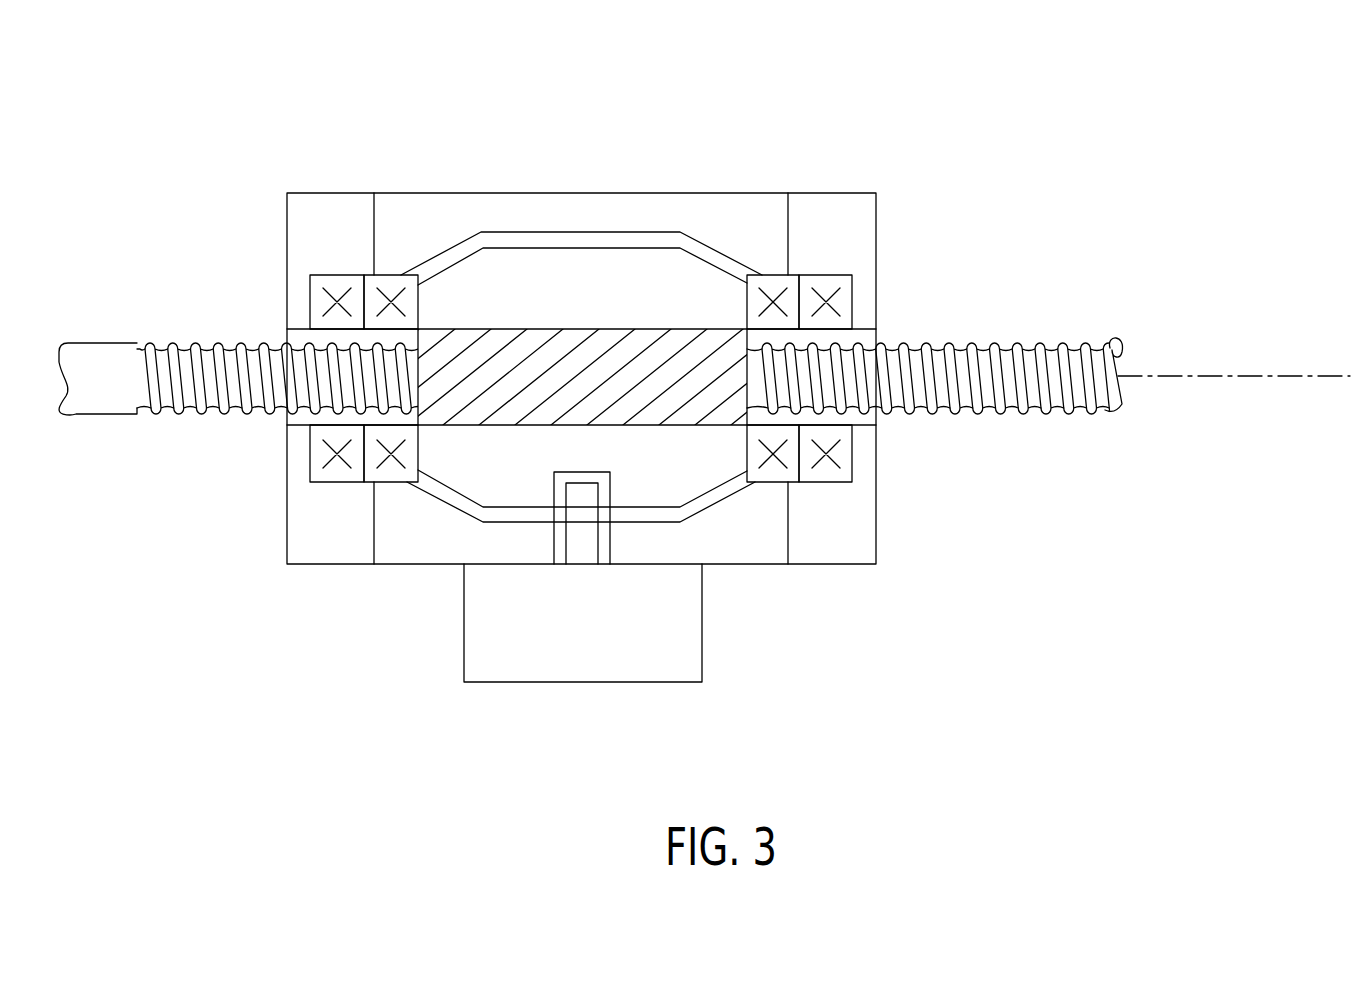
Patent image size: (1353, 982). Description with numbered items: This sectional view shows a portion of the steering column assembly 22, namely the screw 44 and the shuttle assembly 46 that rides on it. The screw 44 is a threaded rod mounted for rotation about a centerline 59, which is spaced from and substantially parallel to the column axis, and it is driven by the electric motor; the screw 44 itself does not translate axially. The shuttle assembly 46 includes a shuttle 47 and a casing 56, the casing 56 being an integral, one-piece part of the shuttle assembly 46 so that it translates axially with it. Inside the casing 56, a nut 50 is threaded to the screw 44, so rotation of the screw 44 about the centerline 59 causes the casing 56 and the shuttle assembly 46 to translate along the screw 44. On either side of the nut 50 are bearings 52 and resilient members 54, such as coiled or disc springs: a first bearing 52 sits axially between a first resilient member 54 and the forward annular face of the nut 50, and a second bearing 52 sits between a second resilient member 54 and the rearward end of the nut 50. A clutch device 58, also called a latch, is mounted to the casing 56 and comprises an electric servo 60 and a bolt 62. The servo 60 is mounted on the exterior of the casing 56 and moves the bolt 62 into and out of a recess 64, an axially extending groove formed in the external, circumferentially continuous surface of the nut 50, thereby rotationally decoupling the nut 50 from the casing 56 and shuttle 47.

The drive assembly 22 is at (172, 133).
The screw 44 is at (146, 342).
The shuttle assembly 46 is at (748, 575).
The shuttle 47 is at (863, 222).
The nut 50 is at (450, 467).
The bearing 52 is at (400, 275).
The resilient member 54 is at (840, 307).
The casing 56 is at (598, 203).
The clutch device 58 is at (586, 712).
The centerline 59 is at (1222, 378).
The electric servo 60 is at (667, 682).
The bolt 62 is at (573, 535).
The recess 64 is at (592, 477).